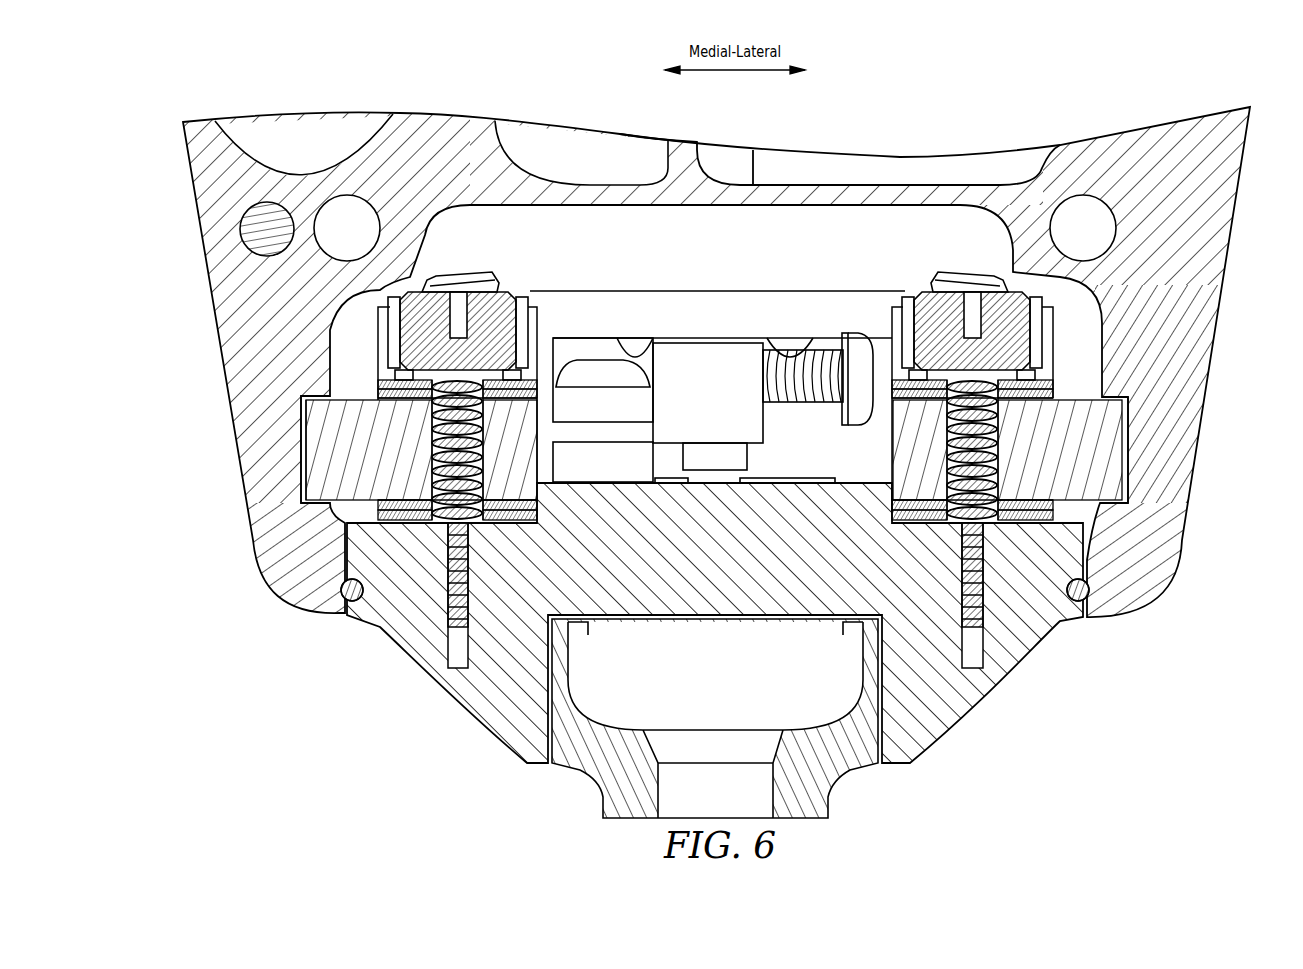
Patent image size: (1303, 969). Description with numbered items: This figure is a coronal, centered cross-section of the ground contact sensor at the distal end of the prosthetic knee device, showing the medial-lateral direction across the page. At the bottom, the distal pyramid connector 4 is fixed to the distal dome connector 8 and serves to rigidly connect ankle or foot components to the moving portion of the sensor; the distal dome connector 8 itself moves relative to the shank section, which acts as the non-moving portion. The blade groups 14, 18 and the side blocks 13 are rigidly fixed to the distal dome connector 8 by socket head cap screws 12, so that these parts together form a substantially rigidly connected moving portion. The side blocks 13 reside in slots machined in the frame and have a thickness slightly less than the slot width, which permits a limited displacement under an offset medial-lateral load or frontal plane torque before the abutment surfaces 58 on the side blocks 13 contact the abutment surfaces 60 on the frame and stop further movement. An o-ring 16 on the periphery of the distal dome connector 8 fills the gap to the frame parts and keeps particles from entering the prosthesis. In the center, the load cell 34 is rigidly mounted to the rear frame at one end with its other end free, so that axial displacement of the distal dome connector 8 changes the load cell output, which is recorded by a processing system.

The distal pyramid connector 4 is at (835, 787).
The distal dome connector 8 is at (968, 688).
The socket head cap screws 12 is at (428, 322).
The side blocks 13 is at (352, 452).
The blade group 14 is at (385, 384).
The o-ring 16 is at (342, 586).
The blade group 18 is at (1105, 365).
The load cell 34 is at (712, 388).
The abutment surfaces 58 is at (1060, 390).
The abutment surfaces 60 is at (1125, 420).